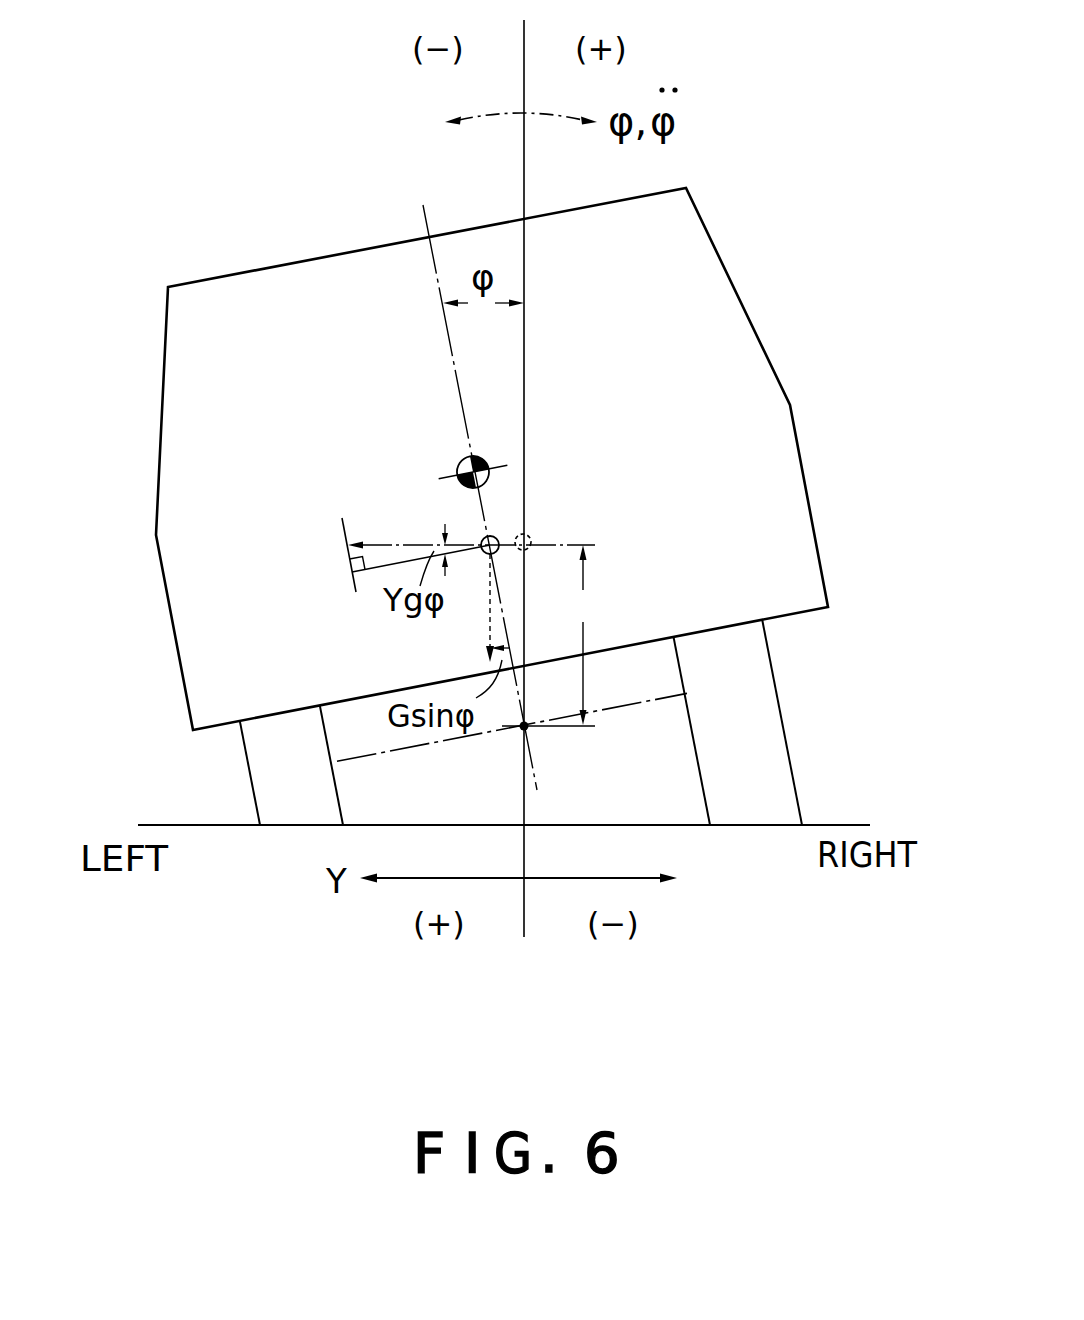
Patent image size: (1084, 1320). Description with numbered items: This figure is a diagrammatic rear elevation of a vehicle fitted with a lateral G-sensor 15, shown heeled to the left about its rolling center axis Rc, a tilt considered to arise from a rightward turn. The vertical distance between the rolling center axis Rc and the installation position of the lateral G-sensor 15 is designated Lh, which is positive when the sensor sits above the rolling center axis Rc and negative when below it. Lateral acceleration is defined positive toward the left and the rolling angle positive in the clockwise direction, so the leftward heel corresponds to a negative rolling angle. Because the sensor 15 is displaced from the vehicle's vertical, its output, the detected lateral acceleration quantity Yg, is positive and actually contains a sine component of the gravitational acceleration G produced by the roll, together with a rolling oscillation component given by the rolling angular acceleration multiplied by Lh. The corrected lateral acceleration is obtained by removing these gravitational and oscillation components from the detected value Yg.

The lateral G-sensor 15 is at (497, 538).
The rolling center axis Rc is at (526, 729).
The vertical distance between rolling center axis and sensor installation position Lh is at (585, 635).
The gravitational acceleration G is at (477, 608).
The detected quantity of lateral acceleration Yg is at (391, 545).